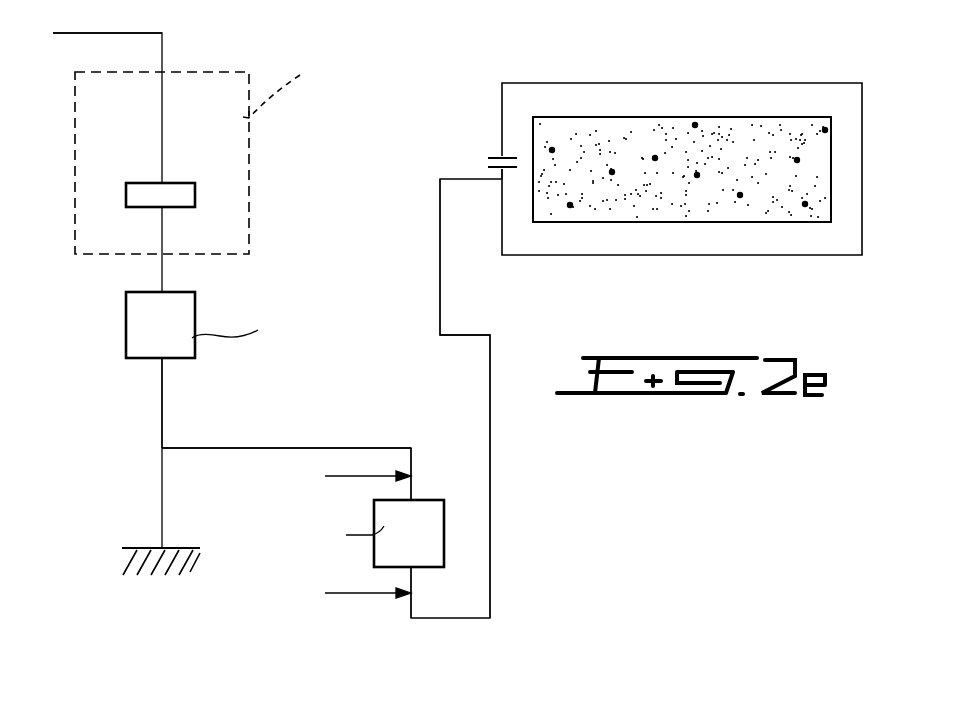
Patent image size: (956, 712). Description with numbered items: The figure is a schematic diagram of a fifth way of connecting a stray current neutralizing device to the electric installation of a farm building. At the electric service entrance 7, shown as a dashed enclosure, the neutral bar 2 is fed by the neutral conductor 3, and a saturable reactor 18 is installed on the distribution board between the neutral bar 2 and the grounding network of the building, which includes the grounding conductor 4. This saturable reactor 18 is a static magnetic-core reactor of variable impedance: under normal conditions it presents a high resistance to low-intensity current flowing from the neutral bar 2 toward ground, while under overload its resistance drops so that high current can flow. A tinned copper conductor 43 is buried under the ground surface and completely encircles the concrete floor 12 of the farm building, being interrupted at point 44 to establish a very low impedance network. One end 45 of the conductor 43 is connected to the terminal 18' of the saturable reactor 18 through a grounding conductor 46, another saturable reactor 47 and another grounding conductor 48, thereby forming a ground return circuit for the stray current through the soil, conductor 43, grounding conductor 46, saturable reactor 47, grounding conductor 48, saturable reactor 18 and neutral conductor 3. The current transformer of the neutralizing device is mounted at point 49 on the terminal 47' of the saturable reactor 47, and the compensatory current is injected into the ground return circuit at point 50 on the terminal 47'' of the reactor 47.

The neutral bar 2 is at (157, 190).
The neutral conductor 3 is at (162, 52).
The grounding conductor 4 is at (162, 512).
The electric service entrance 7 is at (224, 80).
The concrete floor 12 is at (779, 215).
The saturable reactor 18 is at (229, 324).
The terminal of the saturable reactor 18' is at (211, 403).
The tinned copper conductor 43 is at (755, 83).
The interruption point 44 is at (485, 163).
The end of the conductor 45 is at (507, 183).
The grounding conductor 46 is at (490, 452).
The saturable reactor 47 is at (380, 533).
The terminal of the saturable reactor 47' is at (440, 470).
The terminal of the reactor 47'' is at (442, 592).
The grounding conductor 48 is at (346, 447).
The current transformer mounting point 49 is at (352, 472).
The compensatory current injection point 50 is at (350, 594).